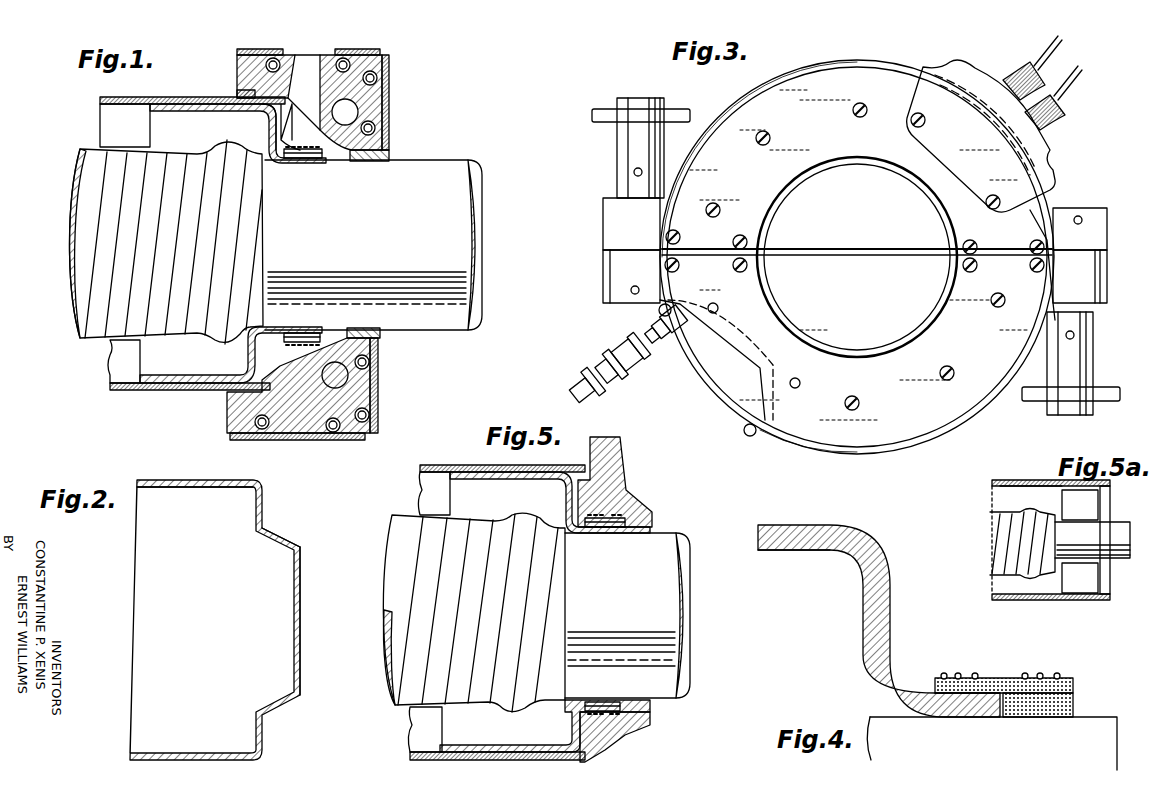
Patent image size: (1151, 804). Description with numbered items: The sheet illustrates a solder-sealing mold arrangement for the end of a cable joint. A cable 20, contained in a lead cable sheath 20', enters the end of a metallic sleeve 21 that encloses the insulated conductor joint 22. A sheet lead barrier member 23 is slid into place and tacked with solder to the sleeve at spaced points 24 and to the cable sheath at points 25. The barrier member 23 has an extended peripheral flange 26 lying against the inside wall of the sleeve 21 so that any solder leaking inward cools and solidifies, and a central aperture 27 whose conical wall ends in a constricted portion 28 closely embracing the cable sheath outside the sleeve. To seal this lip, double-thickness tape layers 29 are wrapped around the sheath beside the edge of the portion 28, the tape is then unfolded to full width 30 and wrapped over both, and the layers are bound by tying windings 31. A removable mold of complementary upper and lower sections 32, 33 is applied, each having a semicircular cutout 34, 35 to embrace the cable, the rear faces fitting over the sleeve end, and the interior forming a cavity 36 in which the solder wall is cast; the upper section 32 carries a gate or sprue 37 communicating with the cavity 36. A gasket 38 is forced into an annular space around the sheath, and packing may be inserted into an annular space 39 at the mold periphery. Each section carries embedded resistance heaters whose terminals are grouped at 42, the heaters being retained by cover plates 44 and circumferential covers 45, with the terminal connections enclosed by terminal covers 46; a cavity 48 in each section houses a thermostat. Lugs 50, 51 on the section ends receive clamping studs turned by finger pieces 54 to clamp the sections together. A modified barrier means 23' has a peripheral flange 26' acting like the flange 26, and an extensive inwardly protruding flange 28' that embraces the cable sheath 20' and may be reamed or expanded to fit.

In FIG. 1, the cable 20 is at (389, 236).
In FIG. 5, the cable 20 is at (644, 598).
In FIG. 4, the cable 20 is at (992, 731).
In FIG. 5a, the cable sheath 20' is at (1060, 544).
In FIG. 1, the metallic sleeve 21 is at (172, 100).
In FIG. 5, the metallic sleeve 21 is at (430, 470).
In FIG. 5a, the metallic sleeve 21 is at (1015, 482).
In FIG. 1, the insulated conductor joint 22 is at (82, 330).
In FIG. 5, the insulated conductor joint 22 is at (400, 705).
In FIG. 1, the barrier member 23 is at (233, 243).
In FIG. 2, the barrier member 23 is at (215, 610).
In FIG. 5, the barrier member 23 is at (545, 612).
In FIG. 4, the barrier member 23 is at (879, 621).
In FIG. 5a, the modified barrier means 23' is at (1080, 578).
In FIG. 1, the solder tack to sleeve 24 is at (270, 120).
In FIG. 1, the solder tack to cable sheath 25 is at (306, 332).
In FIG. 5, the solder tack to cable sheath 25 is at (606, 700).
In FIG. 1, the peripheral flange 26 is at (126, 243).
In FIG. 2, the peripheral flange 26 is at (195, 508).
In FIG. 5, the peripheral flange 26 is at (441, 612).
In FIG. 4, the peripheral flange 26 is at (794, 564).
In FIG. 5a, the peripheral flange of modified barrier 26' is at (1031, 495).
In FIG. 2, the aperture 27 is at (276, 604).
In FIG. 1, the constricted flange portion 28 is at (303, 174).
In FIG. 2, the constricted flange portion 28 is at (296, 532).
In FIG. 5, the constricted flange portion 28 is at (605, 547).
In FIG. 4, the constricted flange portion 28 is at (967, 722).
In FIG. 5a, the inwardly protruding flange 28' is at (1080, 505).
In FIG. 4, the double-thickness tape layers 29 is at (1075, 688).
In FIG. 5, the full-width tape wrapping 30 is at (626, 520).
In FIG. 4, the full-width tape wrapping 30 is at (1003, 678).
In FIG. 5, the tying windings 31 is at (608, 513).
In FIG. 4, the tying windings 31 is at (975, 673).
In FIG. 1, the upper mold section 32 is at (388, 99).
In FIG. 3, the upper mold section 32 is at (726, 118).
In FIG. 1, the lower mold section 33 is at (380, 390).
In FIG. 3, the lower mold section 33 is at (824, 438).
In FIG. 3, the semicircular cutout portion 34 is at (797, 176).
In FIG. 3, the semicircular cutout portion 35 is at (800, 336).
In FIG. 1, the mold cavity 36 is at (390, 128).
In FIG. 1, the gate opening or sprue 37 is at (305, 64).
In FIG. 5, the gate opening or sprue 37 is at (614, 459).
In FIG. 1, the gasket 38 is at (390, 156).
In FIG. 1, the annular packing space 39 is at (238, 94).
In FIG. 3, the heater terminals 42 is at (697, 358).
In FIG. 3, the cover plates 44 is at (1035, 215).
In FIG. 1, the circumferential covers 45 is at (362, 50).
In FIG. 3, the circumferential covers 45 is at (748, 100).
In FIG. 3, the terminal covers 46 is at (1010, 165).
In FIG. 1, the thermostat cavity 48 is at (340, 243).
In FIG. 3, the lug 50 is at (603, 216).
In FIG. 3, the lug 51 is at (603, 282).
In FIG. 3, the finger piece 54 is at (632, 100).